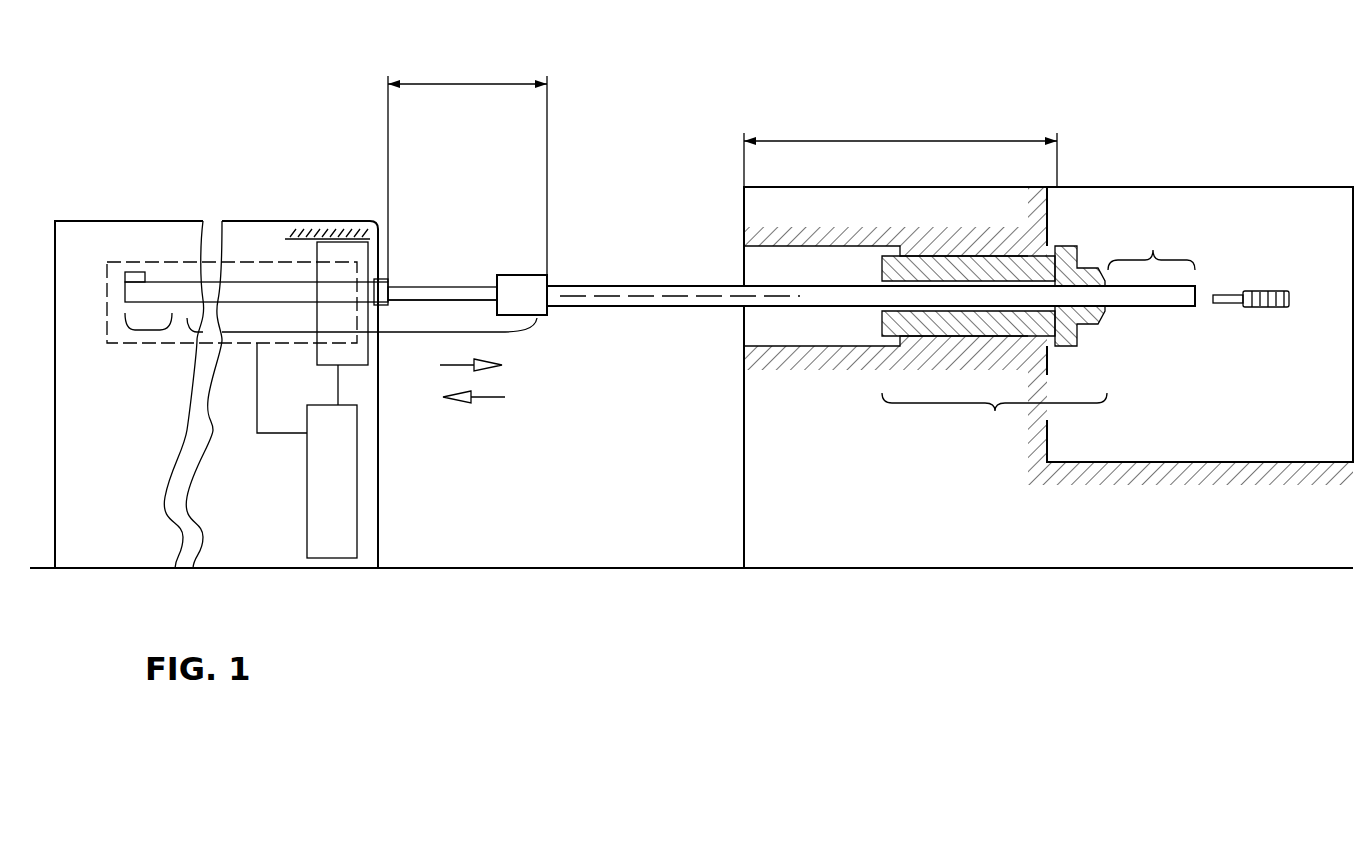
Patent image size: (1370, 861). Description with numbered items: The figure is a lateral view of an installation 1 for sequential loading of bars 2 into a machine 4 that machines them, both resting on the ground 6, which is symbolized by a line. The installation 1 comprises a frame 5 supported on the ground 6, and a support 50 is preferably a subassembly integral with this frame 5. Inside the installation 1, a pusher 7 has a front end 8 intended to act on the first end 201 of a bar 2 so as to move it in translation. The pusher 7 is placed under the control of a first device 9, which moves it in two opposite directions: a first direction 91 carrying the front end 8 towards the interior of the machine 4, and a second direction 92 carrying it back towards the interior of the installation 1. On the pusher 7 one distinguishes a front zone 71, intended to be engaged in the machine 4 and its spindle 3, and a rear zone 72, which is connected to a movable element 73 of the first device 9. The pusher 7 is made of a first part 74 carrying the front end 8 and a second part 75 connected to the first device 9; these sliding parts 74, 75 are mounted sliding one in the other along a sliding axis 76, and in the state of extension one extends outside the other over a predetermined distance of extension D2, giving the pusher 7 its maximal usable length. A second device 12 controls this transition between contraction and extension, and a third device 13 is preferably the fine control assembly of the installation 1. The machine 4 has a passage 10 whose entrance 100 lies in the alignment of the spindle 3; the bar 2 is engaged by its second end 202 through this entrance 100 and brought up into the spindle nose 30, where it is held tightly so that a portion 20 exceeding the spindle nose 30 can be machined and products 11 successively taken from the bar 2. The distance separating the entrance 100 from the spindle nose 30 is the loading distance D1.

The installation 1 is at (243, 178).
The bar 2 is at (685, 297).
The spindle 3 is at (995, 408).
The machine 4 is at (1226, 187).
The frame 5 is at (113, 237).
The ground 6 is at (527, 556).
The pusher 7 is at (413, 257).
The front end 8 is at (512, 285).
The first device 9 is at (173, 252).
The passage 10 is at (803, 329).
The product 11 is at (1264, 270).
The second device 12 is at (341, 255).
The third device 13 is at (307, 507).
The portion 20 is at (1153, 250).
The spindle nose 30 is at (1063, 382).
The support 50 is at (287, 249).
The front zone 71 is at (357, 352).
The rear zone 72 is at (150, 333).
The movable element 73 is at (125, 280).
The first part 74 is at (445, 293).
The second part 75 is at (240, 292).
The sliding axis 76 is at (625, 297).
The first direction 91 is at (460, 366).
The second direction 92 is at (490, 402).
The entrance 100 is at (730, 326).
The first end 201 is at (582, 268).
The second end 202 is at (1153, 334).
The loading distance D1 is at (910, 141).
The distance of extension D2 is at (468, 84).